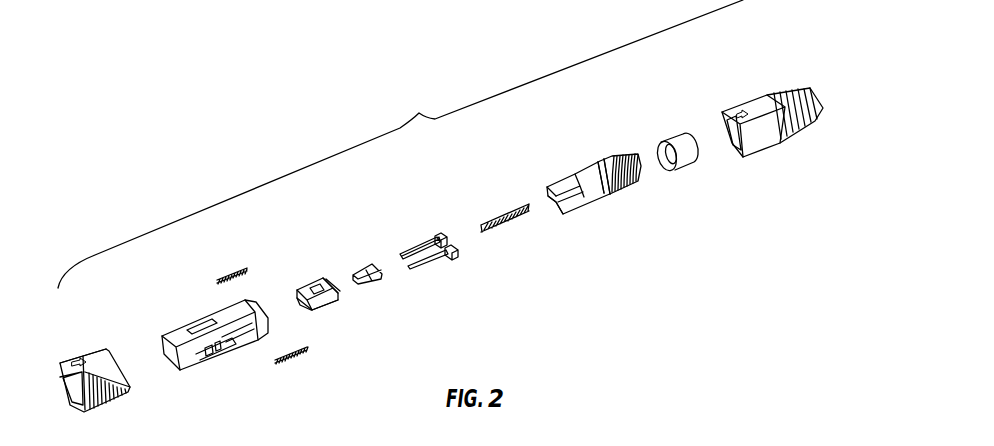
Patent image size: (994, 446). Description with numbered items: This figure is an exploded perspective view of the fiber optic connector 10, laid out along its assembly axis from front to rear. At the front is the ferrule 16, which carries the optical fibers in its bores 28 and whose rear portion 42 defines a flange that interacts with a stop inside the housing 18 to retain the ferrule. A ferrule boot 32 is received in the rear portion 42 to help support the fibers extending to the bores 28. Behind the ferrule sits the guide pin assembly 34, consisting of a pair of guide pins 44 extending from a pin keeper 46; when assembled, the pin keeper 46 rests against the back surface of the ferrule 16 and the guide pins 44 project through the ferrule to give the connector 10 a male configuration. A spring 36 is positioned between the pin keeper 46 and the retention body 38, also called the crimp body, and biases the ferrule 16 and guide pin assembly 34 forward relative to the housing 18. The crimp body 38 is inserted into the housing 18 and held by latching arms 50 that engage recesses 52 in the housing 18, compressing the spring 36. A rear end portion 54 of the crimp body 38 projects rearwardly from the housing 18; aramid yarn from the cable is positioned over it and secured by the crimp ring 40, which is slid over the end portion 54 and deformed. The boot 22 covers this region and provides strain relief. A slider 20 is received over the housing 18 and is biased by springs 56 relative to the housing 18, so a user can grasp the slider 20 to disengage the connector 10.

The connector 10 is at (400, 144).
The ferrule 16 is at (325, 312).
The housing 18 is at (217, 313).
The slider 20 is at (77, 360).
The boot 22 is at (767, 153).
The bores 28 is at (298, 308).
The ferrule boot 32 is at (367, 267).
The guide pin assembly 34 is at (437, 228).
The spring 36 is at (510, 234).
The retention body 38 is at (620, 207).
The crimp ring 40 is at (665, 135).
The rear portion 42 is at (327, 282).
The guide pins 44 is at (426, 266).
The pin keeper 46 is at (446, 243).
The latching arms 50 is at (550, 184).
The recesses 52 is at (233, 356).
The rear end portion 54 is at (606, 162).
The springs 56 is at (226, 270).